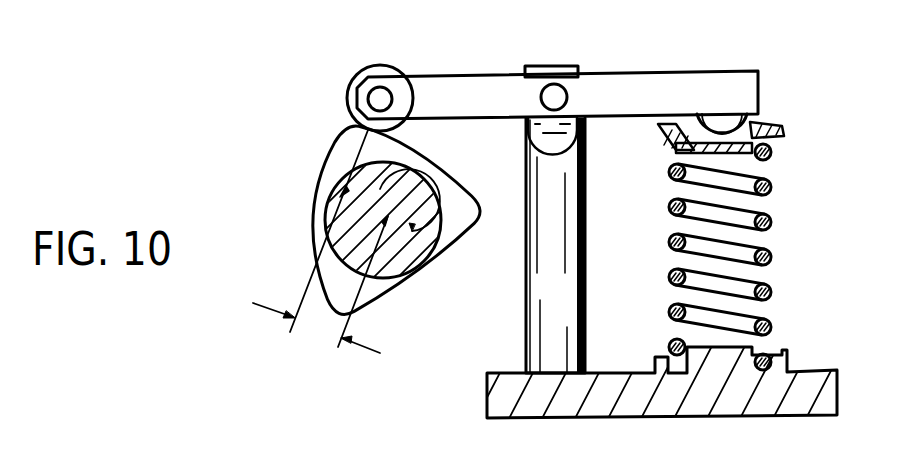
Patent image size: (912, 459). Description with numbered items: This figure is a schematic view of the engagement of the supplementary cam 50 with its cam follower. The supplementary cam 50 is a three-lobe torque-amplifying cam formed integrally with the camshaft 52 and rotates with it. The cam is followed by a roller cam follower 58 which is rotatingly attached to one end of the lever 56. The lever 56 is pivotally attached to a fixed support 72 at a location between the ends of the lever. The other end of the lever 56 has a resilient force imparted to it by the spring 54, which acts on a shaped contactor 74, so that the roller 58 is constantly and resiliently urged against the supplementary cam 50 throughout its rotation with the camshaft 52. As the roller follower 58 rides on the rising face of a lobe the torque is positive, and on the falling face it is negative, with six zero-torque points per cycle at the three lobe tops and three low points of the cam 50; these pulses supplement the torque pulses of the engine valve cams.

The supplementary cam 50 is at (383, 284).
The camshaft 52 is at (333, 200).
The spring 54 is at (772, 223).
The lever 56 is at (627, 72).
The roller cam follower 58 is at (378, 66).
The fixed support 72 is at (526, 313).
The shaped contactor 74 is at (770, 113).